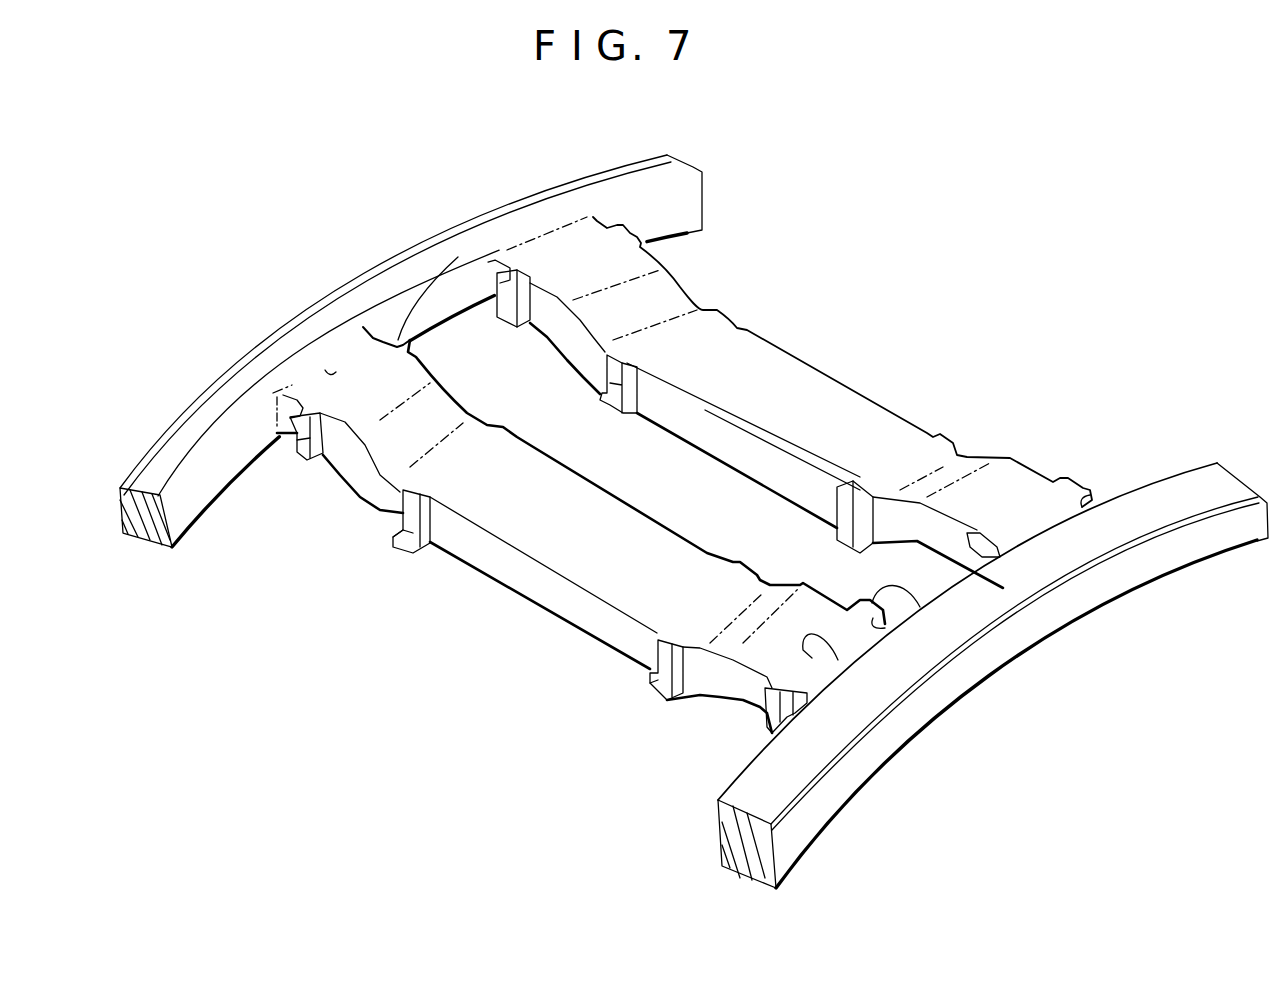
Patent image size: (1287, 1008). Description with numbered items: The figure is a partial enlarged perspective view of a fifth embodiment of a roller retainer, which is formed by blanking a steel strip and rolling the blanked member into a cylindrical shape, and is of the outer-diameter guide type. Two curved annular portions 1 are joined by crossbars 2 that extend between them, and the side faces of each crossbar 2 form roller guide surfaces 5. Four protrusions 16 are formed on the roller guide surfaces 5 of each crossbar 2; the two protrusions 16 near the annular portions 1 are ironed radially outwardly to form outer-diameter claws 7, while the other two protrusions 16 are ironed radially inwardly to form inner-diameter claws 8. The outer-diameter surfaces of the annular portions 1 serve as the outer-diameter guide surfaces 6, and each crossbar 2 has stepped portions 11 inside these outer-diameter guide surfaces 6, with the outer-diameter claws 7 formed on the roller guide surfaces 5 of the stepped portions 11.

The annular portion 1 is at (335, 273).
The crossbar 2 is at (554, 638).
The roller guide surface 5 is at (520, 577).
The outer-diameter guide surface 6 is at (561, 200).
The outer-diameter claw 7 is at (495, 283).
The inner-diameter claw 8 is at (403, 533).
The stepped portion 11 is at (330, 373).
The protrusion 16 is at (302, 453).